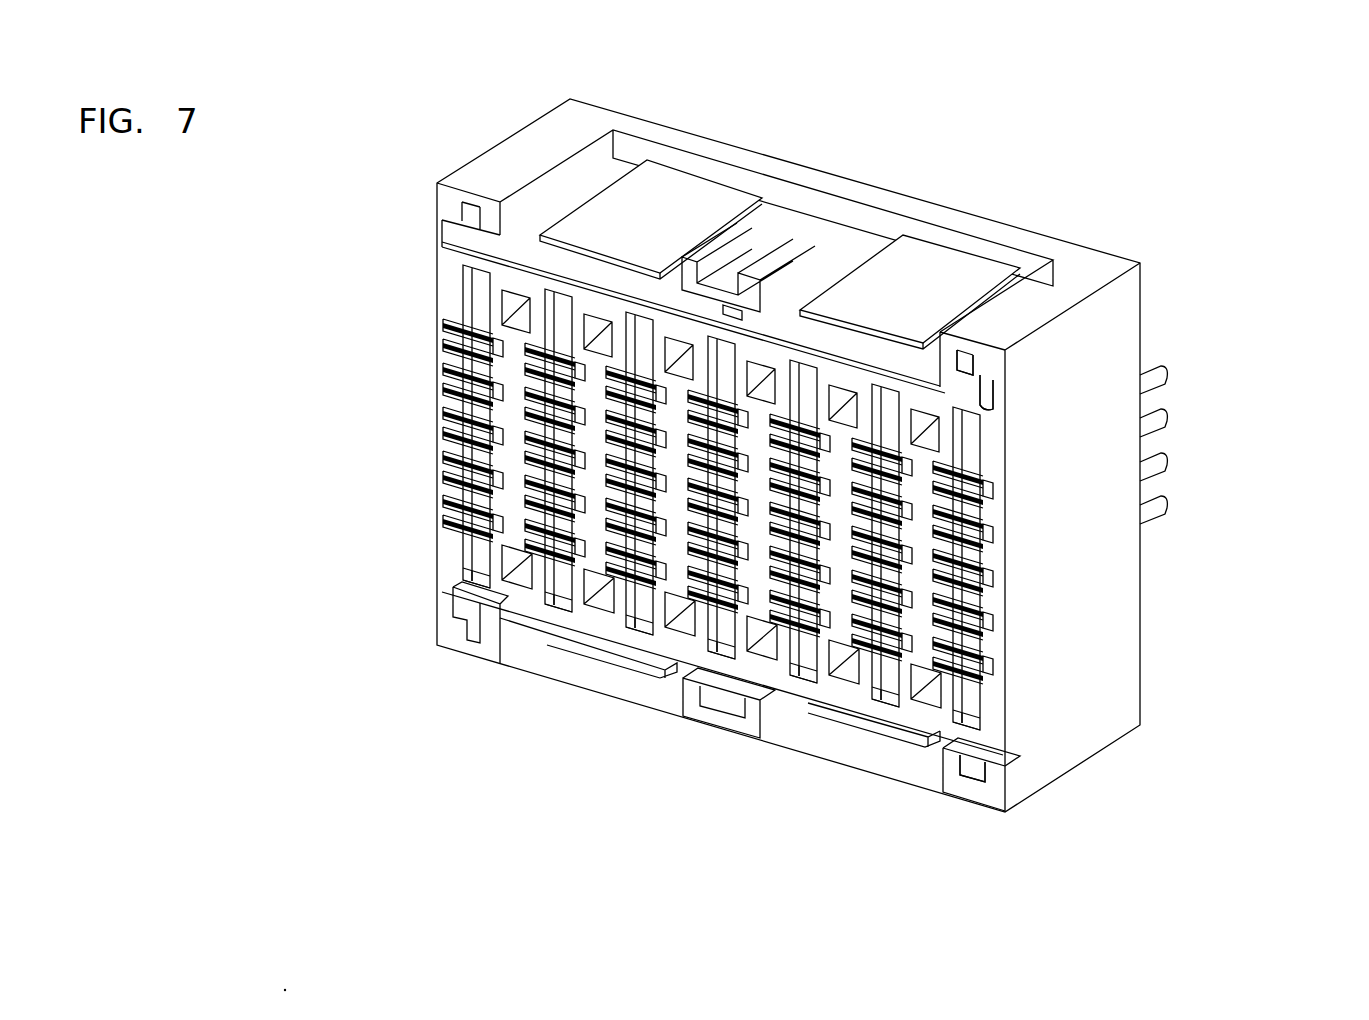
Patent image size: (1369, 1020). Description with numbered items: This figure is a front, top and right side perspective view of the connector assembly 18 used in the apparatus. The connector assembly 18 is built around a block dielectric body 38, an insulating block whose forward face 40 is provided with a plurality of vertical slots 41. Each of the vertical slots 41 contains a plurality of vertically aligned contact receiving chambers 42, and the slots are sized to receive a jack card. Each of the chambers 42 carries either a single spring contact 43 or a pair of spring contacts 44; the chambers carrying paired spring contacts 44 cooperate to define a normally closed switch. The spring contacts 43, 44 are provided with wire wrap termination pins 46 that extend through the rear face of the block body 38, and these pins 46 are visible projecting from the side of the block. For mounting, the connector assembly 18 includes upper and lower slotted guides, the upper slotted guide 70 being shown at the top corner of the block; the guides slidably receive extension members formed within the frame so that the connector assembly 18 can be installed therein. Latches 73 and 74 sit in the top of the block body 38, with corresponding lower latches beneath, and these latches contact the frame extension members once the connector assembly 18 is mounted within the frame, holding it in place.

The connector assembly 18 is at (1262, 178).
The block dielectric body 38 is at (1087, 685).
The forward face 40 is at (443, 568).
The vertical slots 41 is at (728, 635).
The contact receiving chambers 42 is at (1000, 653).
The spring contact 43 is at (690, 570).
The pair of spring contacts 44 is at (445, 432).
The wire wrap termination pins 46 is at (1167, 502).
The upper slotted guide 70 is at (998, 410).
The latch 73 is at (683, 187).
The latch 74 is at (937, 265).